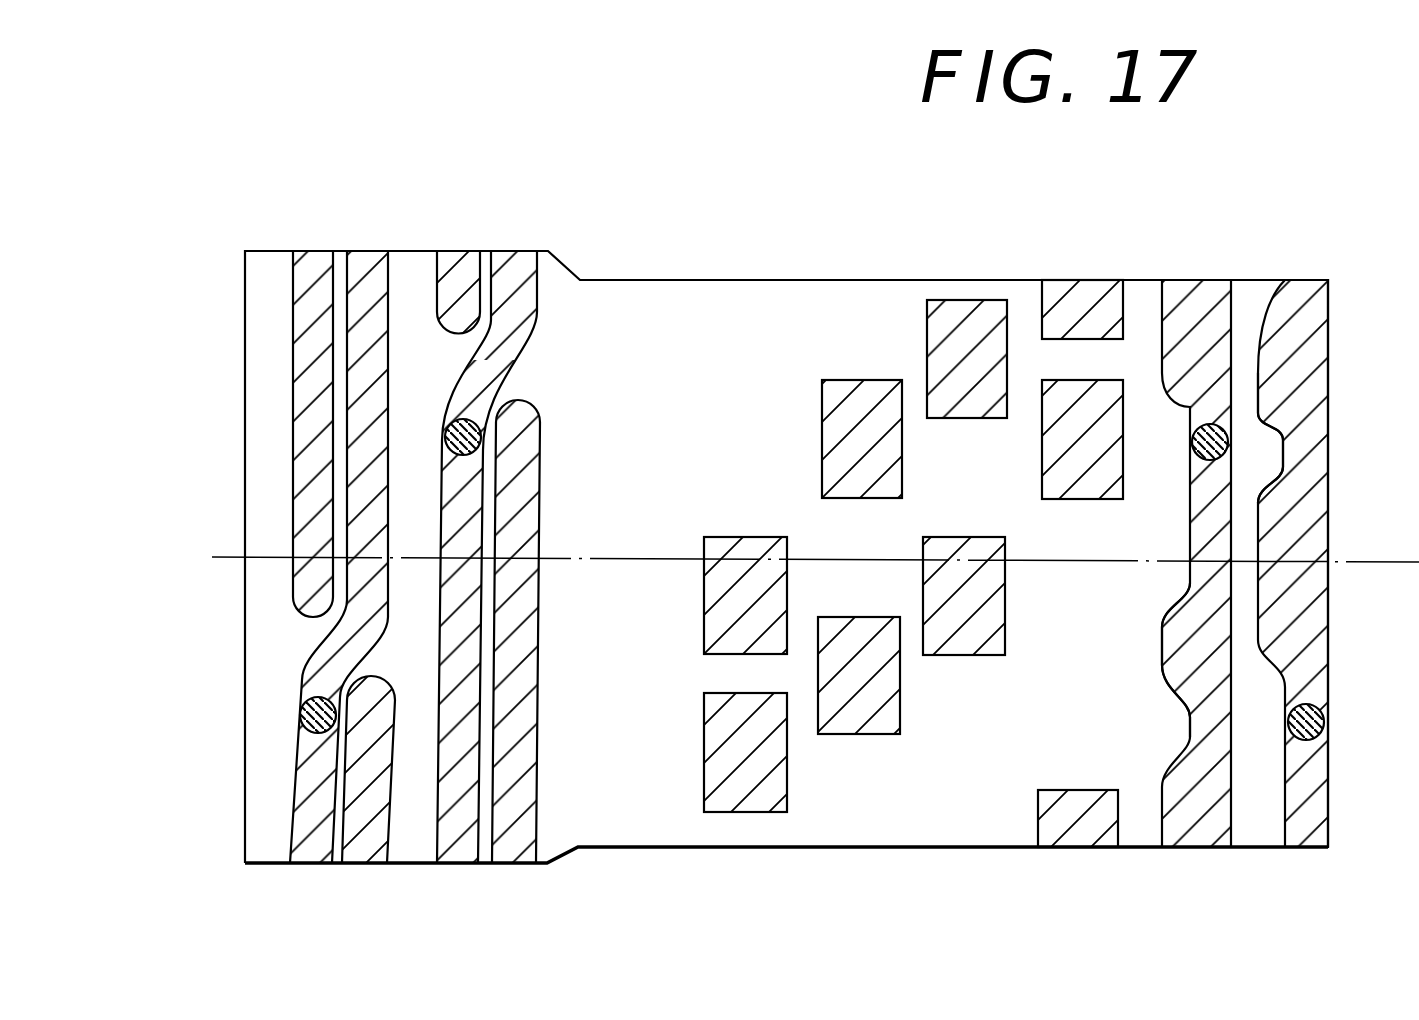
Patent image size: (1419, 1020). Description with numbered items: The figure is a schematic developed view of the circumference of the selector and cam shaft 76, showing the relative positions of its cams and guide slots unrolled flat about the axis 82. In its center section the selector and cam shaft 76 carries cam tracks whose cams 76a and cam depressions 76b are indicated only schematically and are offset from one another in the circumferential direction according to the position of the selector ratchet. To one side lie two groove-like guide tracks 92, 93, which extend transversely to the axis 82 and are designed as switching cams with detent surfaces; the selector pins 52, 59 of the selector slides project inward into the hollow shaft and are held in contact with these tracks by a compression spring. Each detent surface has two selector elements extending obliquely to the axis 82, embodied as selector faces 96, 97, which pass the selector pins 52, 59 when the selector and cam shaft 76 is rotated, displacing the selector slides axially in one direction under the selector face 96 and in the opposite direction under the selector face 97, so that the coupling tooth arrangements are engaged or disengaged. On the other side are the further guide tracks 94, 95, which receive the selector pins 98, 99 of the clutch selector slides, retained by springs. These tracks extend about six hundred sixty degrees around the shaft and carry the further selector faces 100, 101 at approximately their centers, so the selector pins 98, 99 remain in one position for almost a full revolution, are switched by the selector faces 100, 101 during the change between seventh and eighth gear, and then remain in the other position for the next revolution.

The selector and cam shaft 76 is at (678, 274).
The cams 76a is at (1108, 362).
The cam depressions 76b is at (933, 345).
The axis 82 is at (228, 553).
The guide track 95 is at (369, 258).
The selector pin 98 is at (303, 723).
The selector pin 99 is at (443, 423).
The selector face 101 is at (317, 682).
The guide track 94 is at (467, 263).
The selector face 100 is at (503, 350).
The guide track 92 is at (1193, 830).
The guide track 93 is at (1308, 833).
The selector face 96 is at (1175, 598).
The selector face 97 is at (1176, 700).
The selector pin 59 is at (1212, 425).
The selector pin 52 is at (1327, 722).